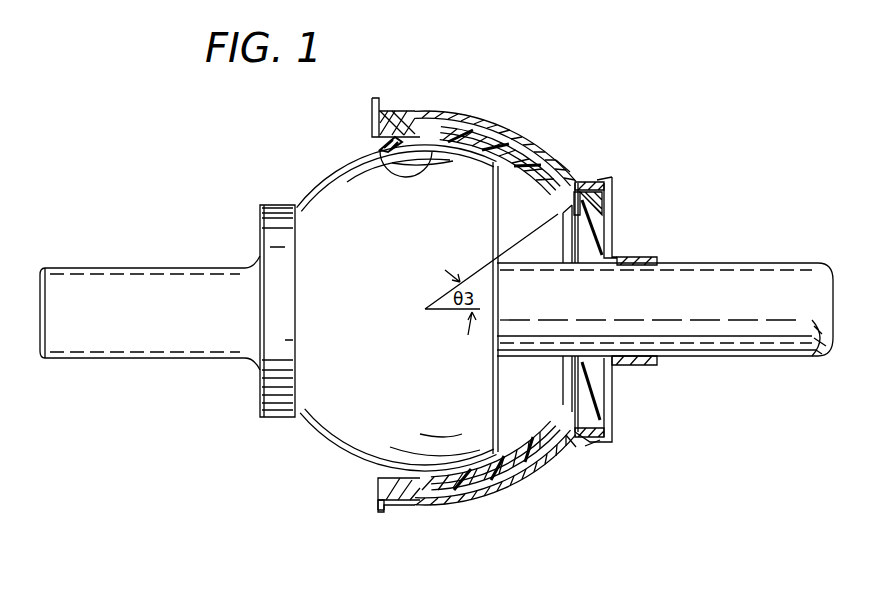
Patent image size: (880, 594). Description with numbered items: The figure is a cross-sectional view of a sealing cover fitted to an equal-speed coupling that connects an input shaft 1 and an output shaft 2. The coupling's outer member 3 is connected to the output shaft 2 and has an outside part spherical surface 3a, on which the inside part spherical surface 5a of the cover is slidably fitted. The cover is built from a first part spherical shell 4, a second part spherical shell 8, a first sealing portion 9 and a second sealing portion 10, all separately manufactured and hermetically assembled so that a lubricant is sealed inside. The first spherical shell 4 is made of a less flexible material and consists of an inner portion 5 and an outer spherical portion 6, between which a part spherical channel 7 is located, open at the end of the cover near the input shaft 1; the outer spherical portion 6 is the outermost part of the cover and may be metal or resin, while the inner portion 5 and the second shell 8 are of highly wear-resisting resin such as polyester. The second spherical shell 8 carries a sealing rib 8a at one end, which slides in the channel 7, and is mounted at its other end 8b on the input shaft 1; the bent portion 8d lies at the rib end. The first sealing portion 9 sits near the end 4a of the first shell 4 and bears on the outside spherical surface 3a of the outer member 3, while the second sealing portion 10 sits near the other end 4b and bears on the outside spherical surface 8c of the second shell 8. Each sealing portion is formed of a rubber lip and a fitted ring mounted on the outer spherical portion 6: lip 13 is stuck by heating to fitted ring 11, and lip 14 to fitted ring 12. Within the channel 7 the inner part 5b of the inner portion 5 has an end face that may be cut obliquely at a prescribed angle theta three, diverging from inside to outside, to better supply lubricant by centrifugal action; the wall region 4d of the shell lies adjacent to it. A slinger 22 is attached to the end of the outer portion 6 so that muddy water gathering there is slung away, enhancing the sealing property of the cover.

The input shaft 1 is at (753, 272).
The output shaft 2 is at (83, 283).
The outer member 3 is at (312, 215).
The outside part spherical surface 3a is at (447, 487).
The first part spherical shell 4 is at (448, 108).
The end of the first spherical shell 4a is at (397, 507).
The other end of the first spherical shell 4b is at (578, 455).
The housing inner wall 4d is at (507, 177).
The inner portion 5 is at (415, 110).
The inside part spherical surface 5a is at (385, 155).
The inner part of the inner portion 5b is at (562, 160).
The outer spherical portion 6 is at (513, 130).
The part spherical channel 7 is at (495, 128).
The second part spherical shell 8 is at (607, 229).
The sealing rib 8a is at (540, 147).
The other end of the second spherical shell 8b is at (640, 368).
The outside spherical surface of the second spherical shell 8c is at (604, 398).
The bent portion 8d is at (580, 180).
The first sealing portion 9 is at (378, 143).
The second sealing portion 10 is at (603, 203).
The fitted ring 11 is at (382, 500).
The fitted ring 12 is at (594, 450).
The lip 13 is at (380, 485).
The lip 14 is at (604, 432).
The slinger 22 is at (590, 183).